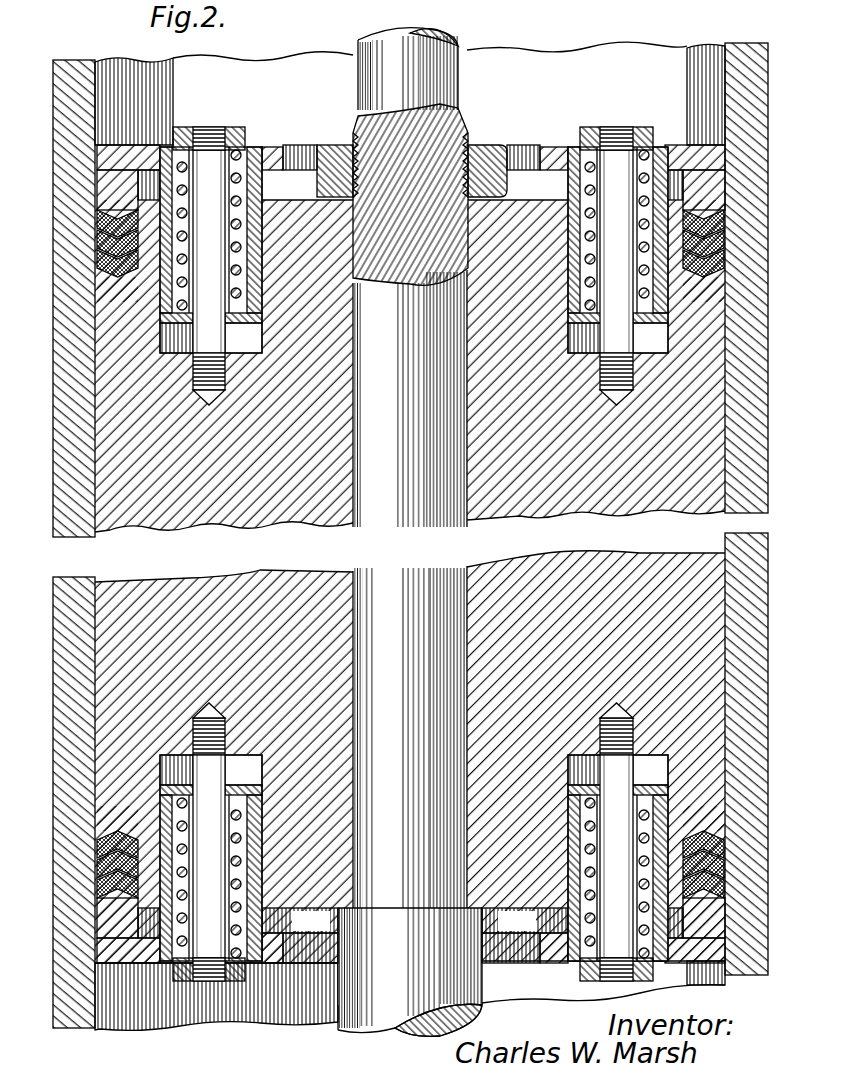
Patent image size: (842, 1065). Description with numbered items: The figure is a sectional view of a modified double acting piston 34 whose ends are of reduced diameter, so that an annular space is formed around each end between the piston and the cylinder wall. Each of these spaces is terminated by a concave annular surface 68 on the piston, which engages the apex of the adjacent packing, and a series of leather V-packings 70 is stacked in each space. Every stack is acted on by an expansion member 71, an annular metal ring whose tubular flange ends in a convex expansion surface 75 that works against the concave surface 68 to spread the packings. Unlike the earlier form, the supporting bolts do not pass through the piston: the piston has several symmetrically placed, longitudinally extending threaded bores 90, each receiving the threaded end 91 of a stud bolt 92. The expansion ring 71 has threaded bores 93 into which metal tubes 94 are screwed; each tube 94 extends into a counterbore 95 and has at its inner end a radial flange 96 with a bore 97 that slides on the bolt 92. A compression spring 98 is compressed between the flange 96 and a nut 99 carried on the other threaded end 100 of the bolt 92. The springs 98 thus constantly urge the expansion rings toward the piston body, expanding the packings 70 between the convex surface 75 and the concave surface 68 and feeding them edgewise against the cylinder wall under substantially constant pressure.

The piston 34 is at (493, 217).
The concave annular surface 68 is at (123, 290).
The leather V-packings 70 is at (125, 278).
The expansion member 71 is at (158, 143).
The convex expansion surface 75 is at (120, 212).
The threaded bores 90 is at (603, 372).
The threaded end 91 is at (636, 360).
The stud bolt 92 is at (193, 368).
The threaded bores 93 is at (262, 148).
The metal tube 94 is at (666, 150).
The counterbore 95 is at (46, 230).
The radial flange 96 is at (601, 349).
The bore 97 is at (655, 330).
The compression spring 98 is at (170, 303).
The nut 99 is at (240, 130).
The threaded end 100 is at (205, 133).